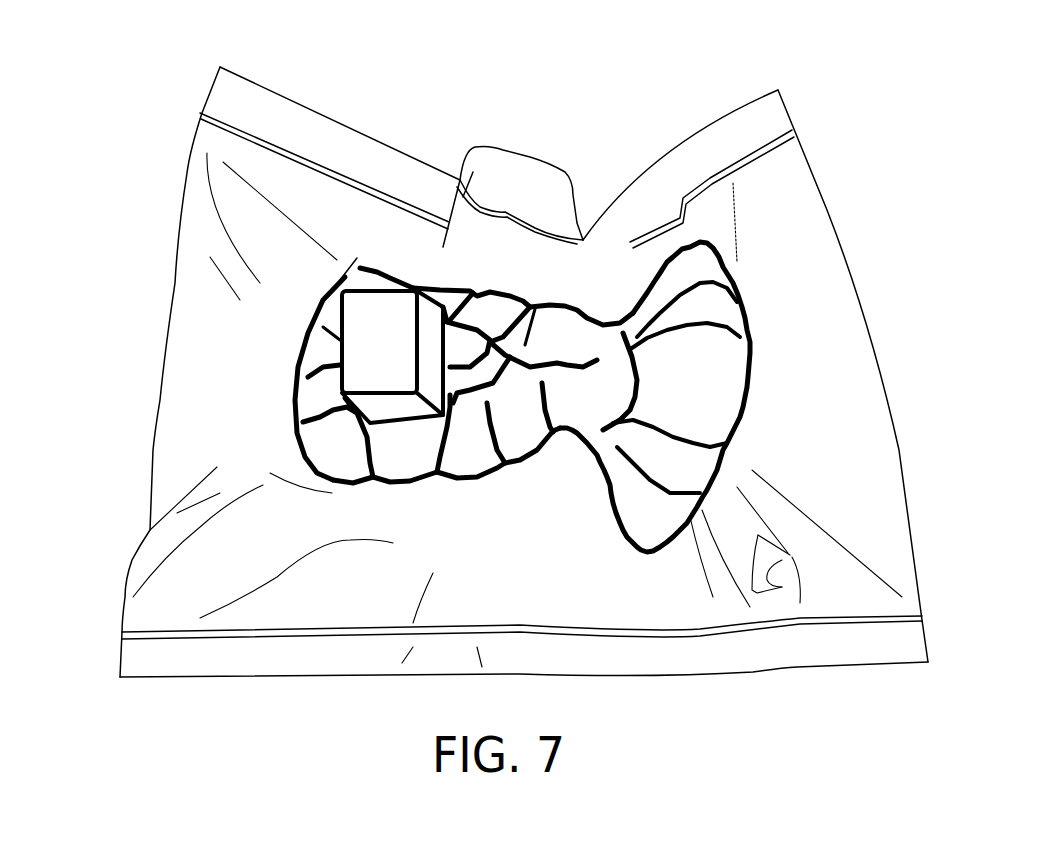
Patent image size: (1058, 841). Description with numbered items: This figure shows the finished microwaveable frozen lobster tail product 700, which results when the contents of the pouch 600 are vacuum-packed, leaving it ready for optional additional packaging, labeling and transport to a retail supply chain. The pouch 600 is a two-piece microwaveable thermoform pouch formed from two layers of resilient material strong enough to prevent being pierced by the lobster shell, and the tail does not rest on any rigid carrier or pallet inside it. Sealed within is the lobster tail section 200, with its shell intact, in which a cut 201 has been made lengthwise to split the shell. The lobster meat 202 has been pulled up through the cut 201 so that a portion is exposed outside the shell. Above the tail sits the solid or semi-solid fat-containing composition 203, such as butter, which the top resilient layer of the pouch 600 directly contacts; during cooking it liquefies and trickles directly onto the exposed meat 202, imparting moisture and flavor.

The product 700 is at (820, 98).
The pouch 600 is at (827, 210).
The lobster tail section 200 is at (498, 342).
The cut 201 is at (540, 360).
The lobster meat 202 is at (360, 280).
The fat-containing composition 203 is at (367, 337).